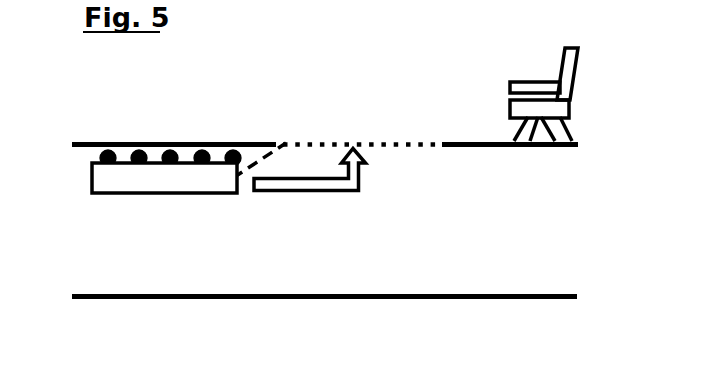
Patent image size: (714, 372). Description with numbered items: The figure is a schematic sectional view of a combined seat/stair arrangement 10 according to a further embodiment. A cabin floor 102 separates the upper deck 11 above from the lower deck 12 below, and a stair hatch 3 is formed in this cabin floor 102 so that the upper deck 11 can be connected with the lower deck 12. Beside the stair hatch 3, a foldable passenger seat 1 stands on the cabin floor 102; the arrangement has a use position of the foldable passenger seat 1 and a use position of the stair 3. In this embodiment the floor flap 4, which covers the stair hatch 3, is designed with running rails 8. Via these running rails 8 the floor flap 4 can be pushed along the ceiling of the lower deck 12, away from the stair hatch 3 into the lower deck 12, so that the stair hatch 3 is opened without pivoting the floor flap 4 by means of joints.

The foldable passenger seat 1 is at (566, 45).
The stair hatch 3 is at (330, 135).
The floor flap 4 is at (166, 170).
The running rail 8 is at (108, 143).
The combined seat/stair arrangement 10 is at (81, 74).
The upper deck 11 is at (410, 119).
The lower deck 12 is at (487, 236).
The cabin floor 102 is at (545, 148).